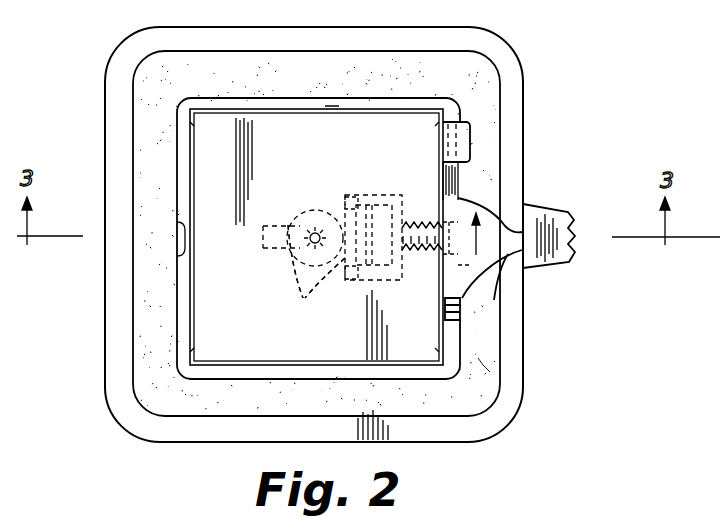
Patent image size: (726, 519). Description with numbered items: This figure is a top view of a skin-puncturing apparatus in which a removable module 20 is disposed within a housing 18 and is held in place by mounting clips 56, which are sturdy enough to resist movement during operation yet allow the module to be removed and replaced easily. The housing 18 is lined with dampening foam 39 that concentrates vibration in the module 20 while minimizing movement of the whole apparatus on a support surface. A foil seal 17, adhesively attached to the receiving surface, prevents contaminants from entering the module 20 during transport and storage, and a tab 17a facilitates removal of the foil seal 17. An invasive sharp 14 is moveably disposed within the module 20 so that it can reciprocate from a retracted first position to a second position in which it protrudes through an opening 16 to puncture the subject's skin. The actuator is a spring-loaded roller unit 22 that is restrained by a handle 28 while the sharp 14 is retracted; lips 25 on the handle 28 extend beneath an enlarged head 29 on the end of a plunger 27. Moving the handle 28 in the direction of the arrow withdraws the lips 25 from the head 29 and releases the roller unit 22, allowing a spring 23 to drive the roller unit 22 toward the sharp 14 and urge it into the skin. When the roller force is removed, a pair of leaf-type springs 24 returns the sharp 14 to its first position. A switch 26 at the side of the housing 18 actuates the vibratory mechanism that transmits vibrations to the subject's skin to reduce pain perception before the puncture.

The invasive sharp 14 is at (303, 214).
The opening 16 is at (318, 232).
The foil seal 17 is at (241, 339).
The tab 17a is at (470, 140).
The housing 18 is at (526, 72).
The removable module 20 is at (461, 306).
The roller unit 22 is at (346, 262).
The spring 23 is at (428, 264).
The leaf-type springs 24 is at (315, 277).
The lips 25 is at (462, 282).
The switch 26 is at (573, 208).
The plunger 27 is at (400, 196).
The handle 28 is at (521, 268).
The enlarged head 29 is at (465, 216).
The dampening foam 39 is at (490, 371).
The mounting clips 56 is at (327, 108).